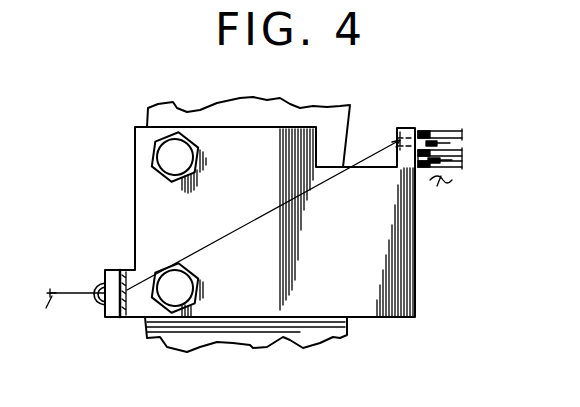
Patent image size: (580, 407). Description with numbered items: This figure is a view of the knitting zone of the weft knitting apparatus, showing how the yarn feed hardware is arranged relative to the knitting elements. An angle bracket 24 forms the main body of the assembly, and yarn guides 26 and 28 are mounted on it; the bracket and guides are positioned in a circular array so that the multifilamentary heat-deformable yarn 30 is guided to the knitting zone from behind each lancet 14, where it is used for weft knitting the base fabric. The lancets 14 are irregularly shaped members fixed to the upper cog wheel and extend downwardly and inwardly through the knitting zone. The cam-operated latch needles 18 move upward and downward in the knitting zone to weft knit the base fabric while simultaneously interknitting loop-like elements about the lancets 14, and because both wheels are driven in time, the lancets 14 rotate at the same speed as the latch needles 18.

The lancet 14 is at (448, 130).
The latch needle 18 is at (448, 160).
The angle bracket 24 is at (397, 306).
The yarn guide 26 is at (100, 302).
The yarn guide 28 is at (397, 132).
The multifilamentary heat-deformable yarn 30 is at (68, 292).